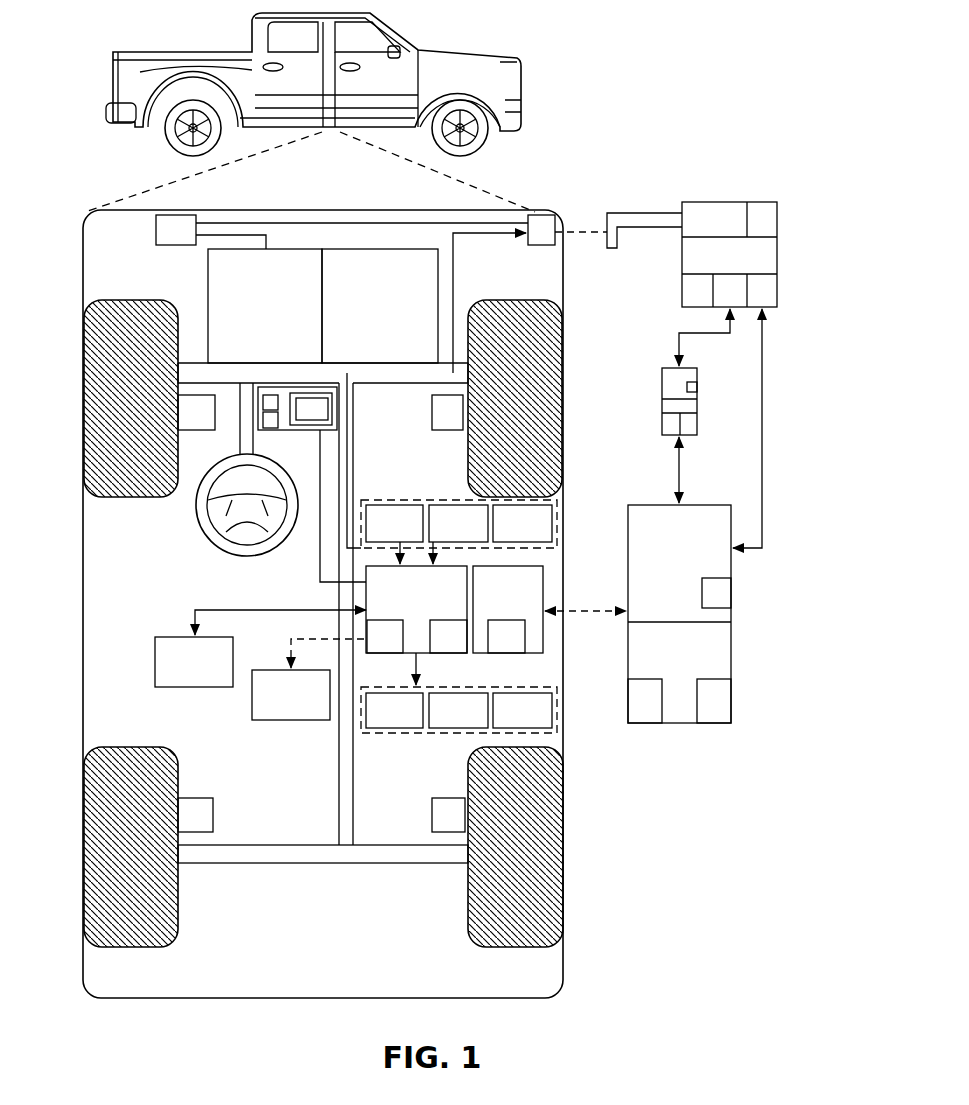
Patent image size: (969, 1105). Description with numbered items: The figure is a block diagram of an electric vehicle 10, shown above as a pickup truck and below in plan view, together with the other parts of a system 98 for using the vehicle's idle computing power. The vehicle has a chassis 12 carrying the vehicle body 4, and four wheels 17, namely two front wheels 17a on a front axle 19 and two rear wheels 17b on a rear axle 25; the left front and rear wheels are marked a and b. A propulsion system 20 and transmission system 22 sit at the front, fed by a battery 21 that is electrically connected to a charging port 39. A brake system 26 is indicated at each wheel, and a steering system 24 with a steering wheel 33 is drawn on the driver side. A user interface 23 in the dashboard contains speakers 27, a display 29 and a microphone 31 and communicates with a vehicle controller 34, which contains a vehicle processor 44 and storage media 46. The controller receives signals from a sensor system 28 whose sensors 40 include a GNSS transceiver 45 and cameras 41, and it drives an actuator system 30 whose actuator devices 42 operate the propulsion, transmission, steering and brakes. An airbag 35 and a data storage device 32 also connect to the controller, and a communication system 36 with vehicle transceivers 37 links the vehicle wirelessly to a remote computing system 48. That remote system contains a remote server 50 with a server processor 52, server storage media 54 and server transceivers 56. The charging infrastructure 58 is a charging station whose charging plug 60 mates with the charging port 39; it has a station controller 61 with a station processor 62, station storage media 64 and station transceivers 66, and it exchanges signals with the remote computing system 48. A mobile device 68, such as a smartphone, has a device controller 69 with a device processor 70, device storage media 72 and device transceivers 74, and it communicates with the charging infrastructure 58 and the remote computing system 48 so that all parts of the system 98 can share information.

The electric vehicle 10 is at (462, 48).
The vehicle body 4 is at (83, 577).
The chassis 12 is at (339, 745).
The wheels 17 is at (130, 300).
The front wheels 17a is at (543, 388).
The rear wheels 17b is at (545, 845).
The front axle a is at (102, 388).
The rear axle b is at (102, 845).
The front axle 19 is at (410, 383).
The propulsion system 20 is at (251, 317).
The battery 21 is at (180, 215).
The transmission system 22 is at (366, 317).
The user interface 23 is at (308, 393).
The steering system 24 is at (282, 432).
The rear axle 25 is at (380, 845).
The brake system 26 is at (184, 425).
The speakers 27 is at (270, 395).
The sensor system 28 is at (425, 500).
The displays 29 is at (263, 420).
The actuator system 30 is at (430, 733).
The microphones 31 is at (299, 421).
The data storage device 32 is at (277, 707).
The steering wheel 33 is at (196, 518).
The vehicle controller 34 is at (402, 608).
The airbag 35 is at (180, 674).
The communication system 36 is at (494, 608).
The vehicle transceivers 37 is at (493, 649).
The charging port 39 is at (543, 213).
The sensors 40 is at (380, 537).
The cameras 41 is at (508, 537).
The actuator devices 42 is at (380, 724).
The vehicle processor 44 is at (372, 649).
The GNSS transceivers 45 is at (444, 537).
The vehicle computer readable storage device or media 46 is at (435, 649).
The remote computing system 48 is at (737, 650).
The remote server 50 is at (665, 662).
The server processor 52 is at (645, 700).
The server computer readable storage device or media 54 is at (718, 703).
The server transceivers 56 is at (715, 595).
The charging infrastructure 58 is at (787, 258).
The charging plug 60 is at (635, 213).
The station controller 61 is at (716, 268).
The station processor 62 is at (695, 290).
The station computer readable storage device or media 64 is at (760, 290).
The station transceivers 66 is at (762, 222).
The mobile device 68 is at (690, 368).
The device controller 69 is at (690, 407).
The device processor 70 is at (672, 422).
The device computer readable storage device or media 72 is at (693, 423).
The device transceivers 74 is at (697, 387).
The system for using idle computing power 98 is at (772, 170).